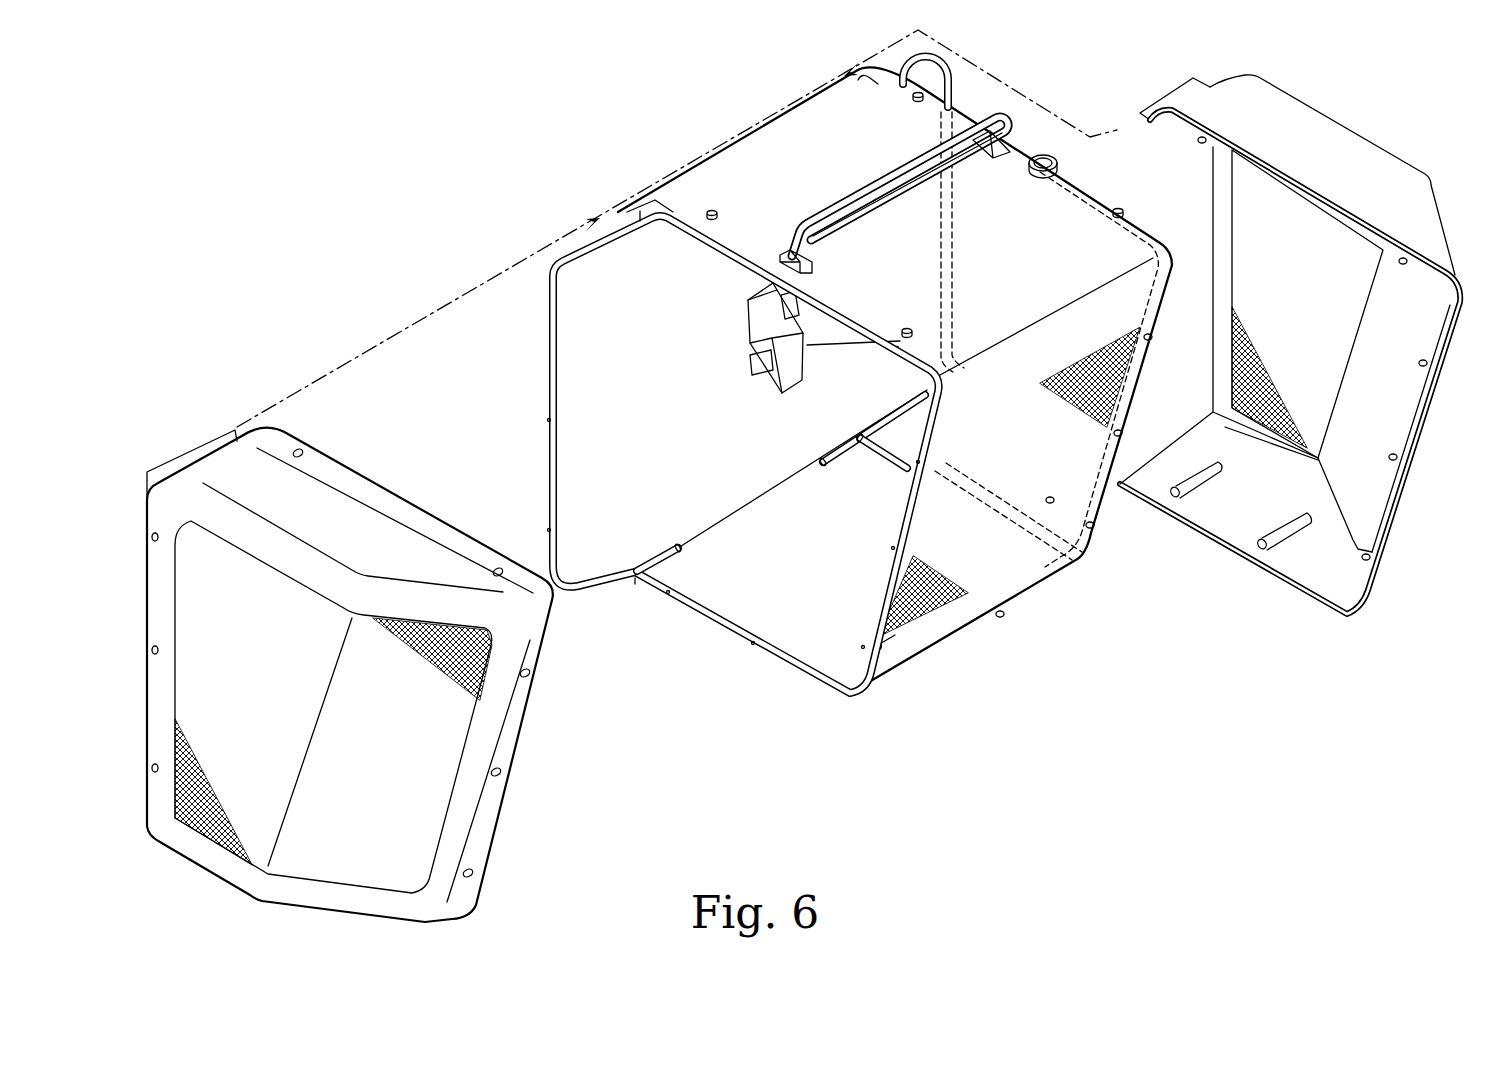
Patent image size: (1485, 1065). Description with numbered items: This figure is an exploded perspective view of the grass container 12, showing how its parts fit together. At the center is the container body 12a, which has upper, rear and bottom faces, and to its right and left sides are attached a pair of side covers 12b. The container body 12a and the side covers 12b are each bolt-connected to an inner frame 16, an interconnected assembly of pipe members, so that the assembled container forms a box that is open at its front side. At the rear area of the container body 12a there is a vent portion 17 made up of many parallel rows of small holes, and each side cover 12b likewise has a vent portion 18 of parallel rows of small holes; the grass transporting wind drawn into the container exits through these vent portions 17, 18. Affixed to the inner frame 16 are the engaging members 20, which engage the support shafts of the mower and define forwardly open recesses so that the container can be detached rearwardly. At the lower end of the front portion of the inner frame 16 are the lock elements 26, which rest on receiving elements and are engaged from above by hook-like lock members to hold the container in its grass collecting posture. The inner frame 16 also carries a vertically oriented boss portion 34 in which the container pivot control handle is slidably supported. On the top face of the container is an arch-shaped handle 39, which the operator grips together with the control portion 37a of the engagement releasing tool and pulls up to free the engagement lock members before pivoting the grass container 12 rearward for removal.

The grass container 12 is at (1199, 689).
The container body 12a is at (939, 630).
The side cover 12b is at (378, 497).
The inner frame 16 is at (540, 385).
The vent portion 17 is at (989, 548).
The vent portion 18 is at (426, 776).
The engaging member 20 is at (757, 320).
The lock element 26 is at (655, 548).
The boss portion 34 is at (1033, 179).
The control portion 37a is at (883, 212).
The handle 39 is at (890, 172).